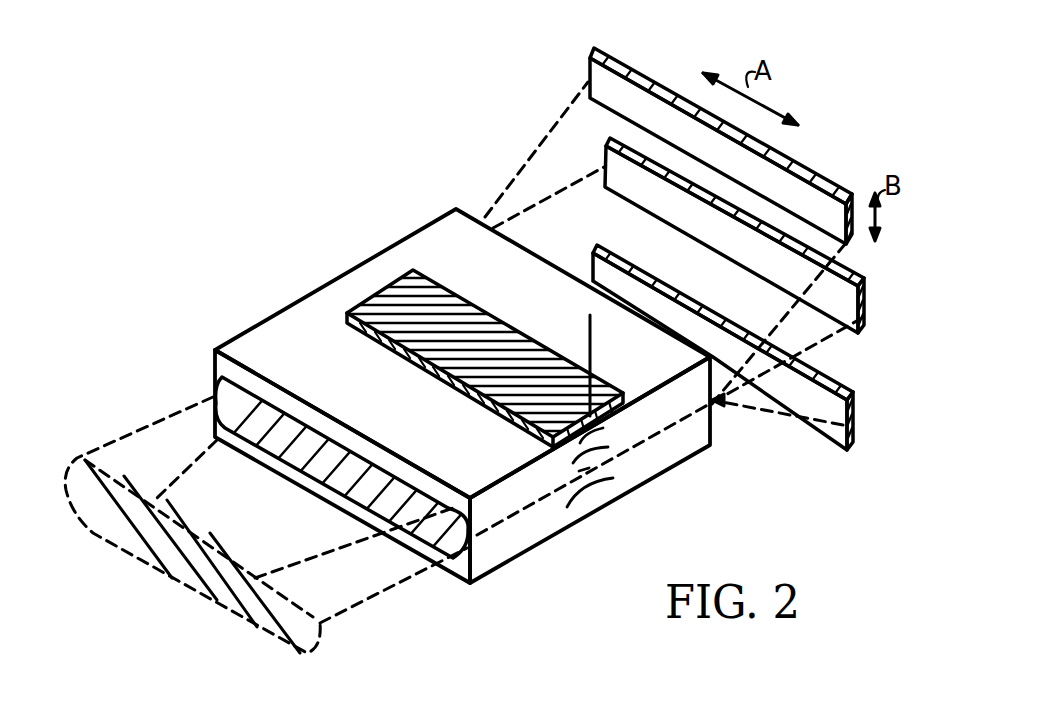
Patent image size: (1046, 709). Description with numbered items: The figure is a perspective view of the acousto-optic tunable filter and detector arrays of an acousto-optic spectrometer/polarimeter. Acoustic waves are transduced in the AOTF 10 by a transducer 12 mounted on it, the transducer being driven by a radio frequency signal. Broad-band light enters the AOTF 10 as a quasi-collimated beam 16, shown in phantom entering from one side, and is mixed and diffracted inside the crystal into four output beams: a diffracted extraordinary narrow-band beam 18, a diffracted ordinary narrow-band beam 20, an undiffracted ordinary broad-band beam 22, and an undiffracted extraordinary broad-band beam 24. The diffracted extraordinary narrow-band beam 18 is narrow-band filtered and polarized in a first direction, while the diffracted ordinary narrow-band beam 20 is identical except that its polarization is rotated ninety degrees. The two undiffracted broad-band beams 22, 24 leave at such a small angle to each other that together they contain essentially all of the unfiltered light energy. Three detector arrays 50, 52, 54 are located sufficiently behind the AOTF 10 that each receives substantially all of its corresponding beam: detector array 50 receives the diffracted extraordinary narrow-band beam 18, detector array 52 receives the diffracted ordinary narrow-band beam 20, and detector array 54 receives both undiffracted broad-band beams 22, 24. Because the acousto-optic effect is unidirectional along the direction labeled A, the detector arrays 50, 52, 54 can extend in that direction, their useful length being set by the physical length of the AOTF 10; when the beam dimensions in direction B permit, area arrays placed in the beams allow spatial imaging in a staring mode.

The AOTF 10 is at (512, 537).
The transducer 12 is at (403, 302).
The quasi-collimated beam 16 is at (168, 422).
The diffracted extraordinary narrow-band beam 18 is at (772, 412).
The diffracted ordinary narrow-band beam 20 is at (528, 155).
The undiffracted ordinary broad-band beam 22 is at (807, 343).
The undiffracted extraordinary broad-band beam 24 is at (809, 346).
The detector array 50 is at (800, 403).
The detector array 52 is at (637, 100).
The detector array 54 is at (668, 200).